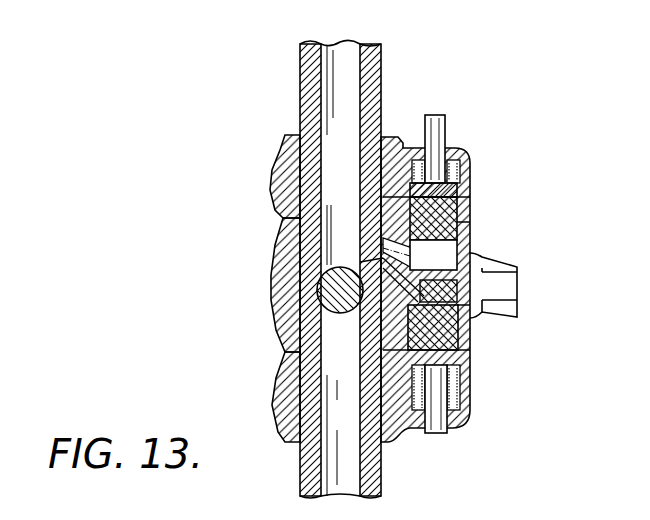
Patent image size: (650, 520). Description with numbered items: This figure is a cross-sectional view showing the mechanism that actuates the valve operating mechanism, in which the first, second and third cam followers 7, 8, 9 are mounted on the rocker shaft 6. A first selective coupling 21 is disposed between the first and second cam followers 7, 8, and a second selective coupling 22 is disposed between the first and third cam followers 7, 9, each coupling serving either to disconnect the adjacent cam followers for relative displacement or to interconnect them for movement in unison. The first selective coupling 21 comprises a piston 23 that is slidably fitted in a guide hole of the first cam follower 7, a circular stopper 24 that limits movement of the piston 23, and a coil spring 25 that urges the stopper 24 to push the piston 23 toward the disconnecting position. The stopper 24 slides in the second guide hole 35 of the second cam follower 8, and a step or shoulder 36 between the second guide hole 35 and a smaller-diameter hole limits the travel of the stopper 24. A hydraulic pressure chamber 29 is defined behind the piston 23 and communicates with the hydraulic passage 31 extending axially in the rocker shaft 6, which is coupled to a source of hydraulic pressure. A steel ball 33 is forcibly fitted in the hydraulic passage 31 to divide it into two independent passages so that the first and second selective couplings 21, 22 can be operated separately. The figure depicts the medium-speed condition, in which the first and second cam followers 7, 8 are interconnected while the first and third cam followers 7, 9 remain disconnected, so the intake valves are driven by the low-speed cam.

The rocker shaft 6 is at (308, 472).
The first cam follower 7 is at (280, 254).
The second cam follower 8 is at (284, 152).
The third cam follower 9 is at (284, 366).
The first selective coupling 21 is at (458, 125).
The second selective coupling 22 is at (446, 444).
The piston 23 is at (433, 233).
The circular stopper 24 is at (452, 190).
The coil spring 25 is at (450, 160).
The hydraulic pressure chamber 29 is at (400, 343).
The hydraulic passage 31 is at (364, 58).
The steel ball 33 is at (334, 312).
The second guide hole 35 is at (408, 214).
The step or shoulder 36 is at (395, 192).